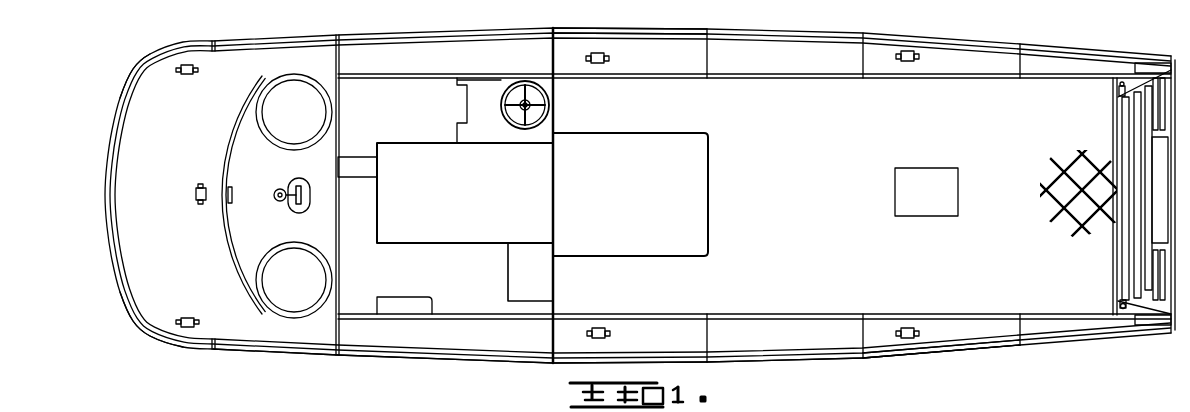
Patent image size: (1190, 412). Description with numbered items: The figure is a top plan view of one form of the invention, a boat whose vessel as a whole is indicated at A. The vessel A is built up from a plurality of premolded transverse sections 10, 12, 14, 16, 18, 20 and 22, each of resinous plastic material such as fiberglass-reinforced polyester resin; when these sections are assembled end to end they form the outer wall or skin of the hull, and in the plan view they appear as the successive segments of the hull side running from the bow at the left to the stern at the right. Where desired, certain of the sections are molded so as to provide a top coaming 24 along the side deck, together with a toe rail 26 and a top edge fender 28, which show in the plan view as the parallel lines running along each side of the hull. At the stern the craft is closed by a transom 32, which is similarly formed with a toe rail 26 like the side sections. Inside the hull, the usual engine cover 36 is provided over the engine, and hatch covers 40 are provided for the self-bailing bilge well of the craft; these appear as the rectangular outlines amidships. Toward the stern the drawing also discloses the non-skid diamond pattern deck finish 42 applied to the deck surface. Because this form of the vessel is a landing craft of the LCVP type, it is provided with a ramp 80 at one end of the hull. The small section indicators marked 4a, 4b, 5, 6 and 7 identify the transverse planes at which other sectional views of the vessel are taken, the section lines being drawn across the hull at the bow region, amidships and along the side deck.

The premolded transverse section 10 is at (1075, 341).
The premolded transverse section 12 is at (968, 350).
The premolded transverse section 14 is at (815, 363).
The premolded transverse section 16 is at (577, 365).
The premolded transverse section 18 is at (458, 362).
The premolded transverse section 20 is at (259, 350).
The premolded transverse section 22 is at (158, 296).
The top coaming 24 is at (950, 72).
The toe rail 26 is at (628, 17).
The top edge fender 28 is at (665, 32).
The transom 32 is at (127, 100).
The engine cover 36 is at (490, 191).
The hatch cover 40 is at (647, 193).
The non-skid diamond pattern deck finish 42 is at (1052, 215).
The ramp 80 is at (1170, 100).
The vessel A is at (397, 370).
The section line 4a is at (83, 181).
The section line 4b is at (1189, 193).
The section line 5 is at (770, 4).
The section line 6 is at (300, 17).
The section line 7 is at (207, 23).